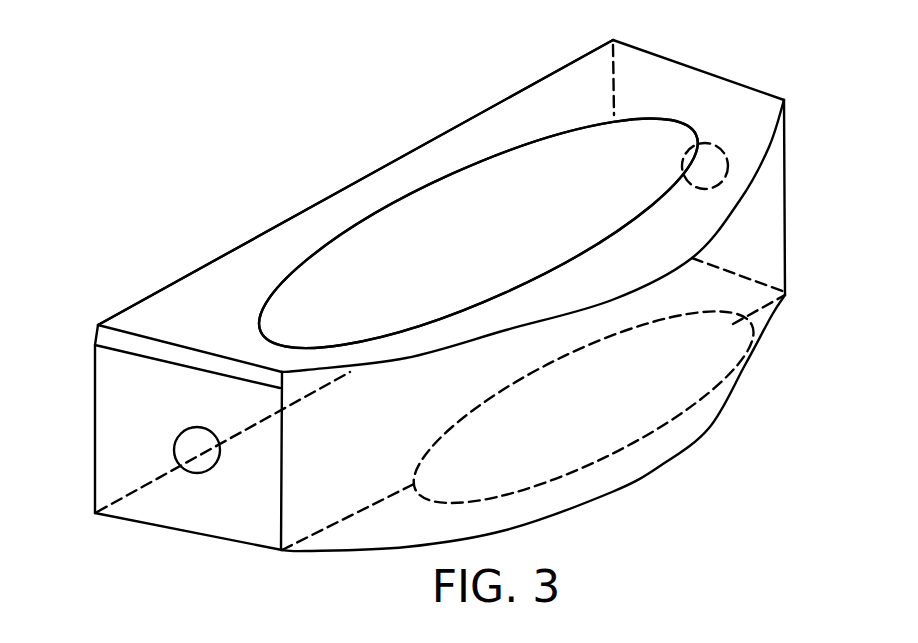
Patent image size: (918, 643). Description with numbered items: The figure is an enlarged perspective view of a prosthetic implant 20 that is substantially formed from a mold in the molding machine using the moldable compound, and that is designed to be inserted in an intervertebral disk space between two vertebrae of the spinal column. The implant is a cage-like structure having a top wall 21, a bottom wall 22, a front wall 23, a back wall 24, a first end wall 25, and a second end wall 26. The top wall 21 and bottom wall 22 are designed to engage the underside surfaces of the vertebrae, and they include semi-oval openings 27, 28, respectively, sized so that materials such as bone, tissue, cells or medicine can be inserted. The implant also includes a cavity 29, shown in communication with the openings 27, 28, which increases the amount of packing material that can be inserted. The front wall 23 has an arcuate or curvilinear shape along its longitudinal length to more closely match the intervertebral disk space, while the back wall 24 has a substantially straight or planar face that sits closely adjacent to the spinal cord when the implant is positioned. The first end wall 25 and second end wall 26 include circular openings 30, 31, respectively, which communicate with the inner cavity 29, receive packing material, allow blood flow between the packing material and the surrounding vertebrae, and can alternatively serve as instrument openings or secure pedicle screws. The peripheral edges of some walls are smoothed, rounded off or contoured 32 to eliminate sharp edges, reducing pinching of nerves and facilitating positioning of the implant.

The prosthetic implant 20 is at (314, 162).
The top wall 21 is at (662, 78).
The bottom wall 22 is at (210, 537).
The front wall 23 is at (767, 235).
The back wall 24 is at (459, 122).
The first end wall 25 is at (117, 388).
The second end wall 26 is at (755, 90).
The opening 27 is at (442, 197).
The opening 28 is at (620, 438).
The cavity 29 is at (345, 287).
The opening 30 is at (187, 443).
The opening 31 is at (722, 165).
The rounded off edges 32 is at (148, 347).